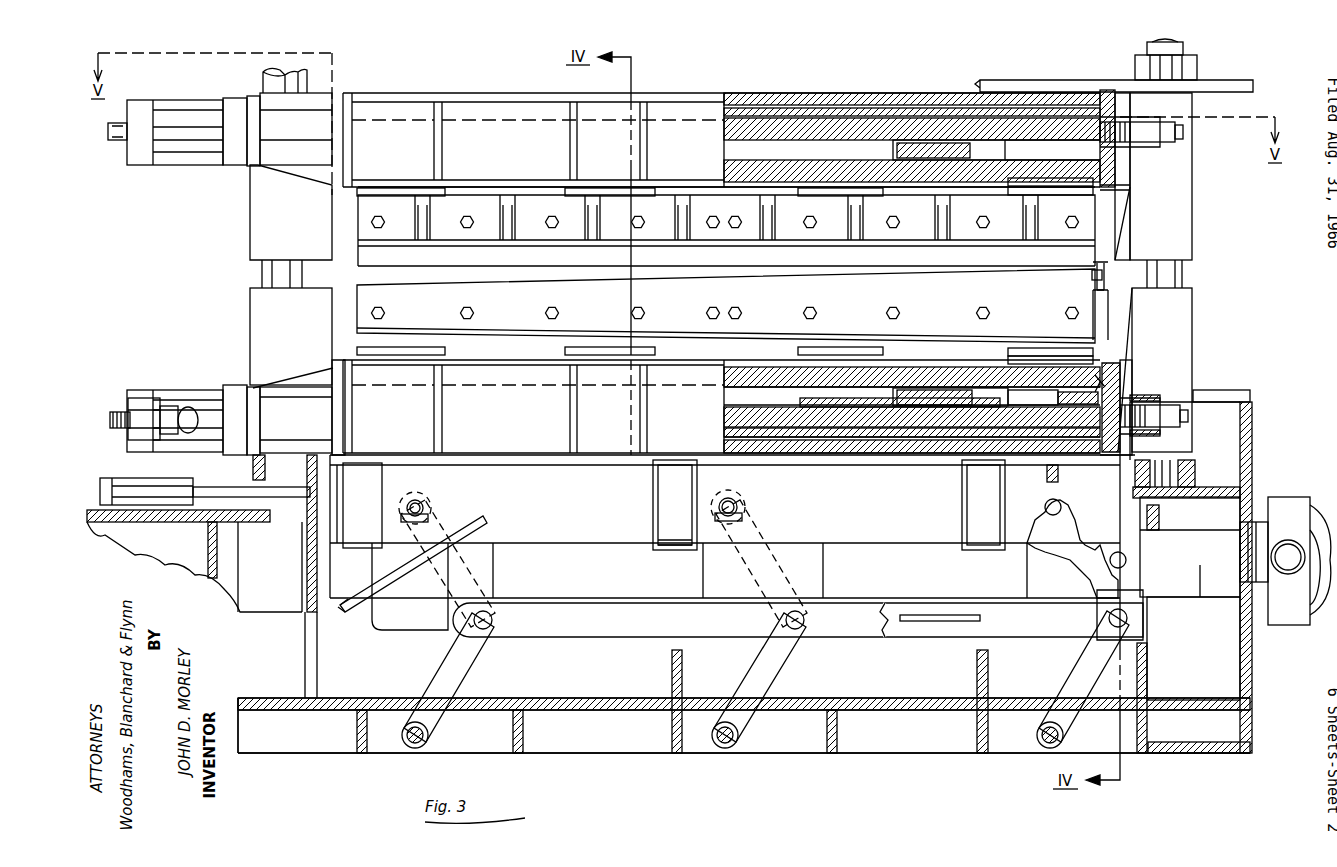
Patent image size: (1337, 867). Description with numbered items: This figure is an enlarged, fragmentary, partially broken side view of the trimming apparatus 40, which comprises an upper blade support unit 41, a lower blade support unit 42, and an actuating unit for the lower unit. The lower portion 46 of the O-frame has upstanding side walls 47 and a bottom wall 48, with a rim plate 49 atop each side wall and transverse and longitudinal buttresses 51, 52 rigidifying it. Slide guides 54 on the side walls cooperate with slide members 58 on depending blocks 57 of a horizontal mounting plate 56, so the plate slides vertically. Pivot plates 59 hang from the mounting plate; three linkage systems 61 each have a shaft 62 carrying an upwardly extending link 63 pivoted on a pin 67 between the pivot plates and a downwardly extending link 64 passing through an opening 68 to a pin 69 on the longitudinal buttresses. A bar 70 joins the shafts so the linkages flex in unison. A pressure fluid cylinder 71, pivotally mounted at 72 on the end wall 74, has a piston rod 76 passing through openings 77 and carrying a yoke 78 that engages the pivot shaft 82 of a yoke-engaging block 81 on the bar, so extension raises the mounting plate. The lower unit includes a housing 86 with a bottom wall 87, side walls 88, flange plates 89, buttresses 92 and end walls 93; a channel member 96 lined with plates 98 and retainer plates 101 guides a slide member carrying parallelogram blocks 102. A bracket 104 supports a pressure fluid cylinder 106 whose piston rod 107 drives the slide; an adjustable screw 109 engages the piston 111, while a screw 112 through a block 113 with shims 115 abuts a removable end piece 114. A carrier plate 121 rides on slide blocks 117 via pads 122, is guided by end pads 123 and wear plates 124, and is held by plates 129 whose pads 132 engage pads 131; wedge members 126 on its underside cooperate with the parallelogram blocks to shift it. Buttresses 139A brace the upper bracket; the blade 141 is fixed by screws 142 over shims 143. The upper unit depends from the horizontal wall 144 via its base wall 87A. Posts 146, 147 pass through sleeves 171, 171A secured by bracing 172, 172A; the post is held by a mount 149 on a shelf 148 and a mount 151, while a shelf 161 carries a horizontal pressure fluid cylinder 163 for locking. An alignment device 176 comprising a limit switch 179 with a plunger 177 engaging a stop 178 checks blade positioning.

The trimming apparatus 40 is at (327, 776).
The upper blade support unit 41 is at (1214, 183).
The lower blade support unit 42 is at (1232, 354).
The lower portion of the O-frame 46 is at (877, 766).
The side walls 47 is at (568, 688).
The bottom wall 48 is at (655, 706).
The rim plate 49 is at (1220, 391).
The transverse buttresses 51 is at (836, 732).
The longitudinal buttresses 52 is at (808, 737).
The slide guides 54 is at (664, 545).
The mounting plate 56 is at (817, 462).
The depending blocks 57 is at (680, 545).
The slide members 58 is at (661, 491).
The pivot plates 59 is at (559, 522).
The linkage systems 61 is at (820, 665).
The shaft 62 is at (786, 616).
The upwardly extending link 63 is at (760, 576).
The downwardly extending link 64 is at (762, 660).
The pin 67 is at (733, 500).
The opening 68 is at (790, 703).
The pin 69 is at (731, 744).
The bar 70 is at (798, 620).
The pressure fluid cylinder 71 is at (1288, 505).
The pivot mounting 72 is at (1290, 575).
The end wall 74 is at (1253, 650).
The piston rod 76 is at (1244, 526).
The openings 77 is at (1245, 616).
The yoke 78 is at (1190, 547).
The yoke-engaging block 81 is at (1075, 560).
The pivot shaft 82 is at (1126, 567).
The housing 86 is at (522, 466).
The bottom wall 87 is at (479, 452).
The base wall 87A is at (470, 97).
The side walls 88 is at (538, 397).
The flange plates 89 is at (397, 362).
The buttresses 92 is at (570, 378).
The end walls 93 is at (337, 345).
The channel member 96 is at (795, 445).
The plates 98 is at (898, 440).
The retainer plates 101 is at (805, 403).
The parallelogram-shaped blocks 102 is at (920, 393).
The bracket 104 is at (313, 378).
The pressure fluid cylinder 106 is at (210, 393).
The piston rod 107 is at (185, 410).
The adjustable screw 109 is at (124, 430).
The piston 111 is at (165, 408).
The adjustable screw 112 is at (1180, 416).
The block 113 is at (1142, 396).
The removable end piece 114 is at (1066, 428).
The shims 115 is at (1153, 424).
The slide blocks 117 is at (1060, 396).
The carrier plate 121 is at (912, 377).
The pads 122 is at (1025, 393).
The pads 123 is at (1126, 385).
The wear plates 124 is at (1098, 398).
The wedge members 126 is at (975, 391).
The plates 129 is at (856, 350).
The pads 131 is at (1025, 356).
The pads 132 is at (1015, 348).
The buttresses 139A is at (983, 231).
The blade 141 is at (726, 306).
The screws 142 is at (471, 310).
The shims 143 is at (485, 335).
The horizontal wall 144 is at (1052, 82).
The post 146 is at (297, 266).
The post 147 is at (1185, 273).
The shelf 148 is at (1243, 480).
The mount 149 is at (1197, 461).
The mount 151 is at (1195, 70).
The shelf 161 is at (250, 522).
The horizontal pressure fluid cylinder 163 is at (205, 491).
The sleeves 171 is at (255, 308).
The sleeves 171A is at (250, 200).
The bracing 172 is at (1133, 318).
The bracing 172A is at (1130, 190).
The alignment device 176 is at (1076, 275).
The actuating plunger 177 is at (1102, 284).
The stop 178 is at (1112, 272).
The limit switch 179 is at (1090, 292).